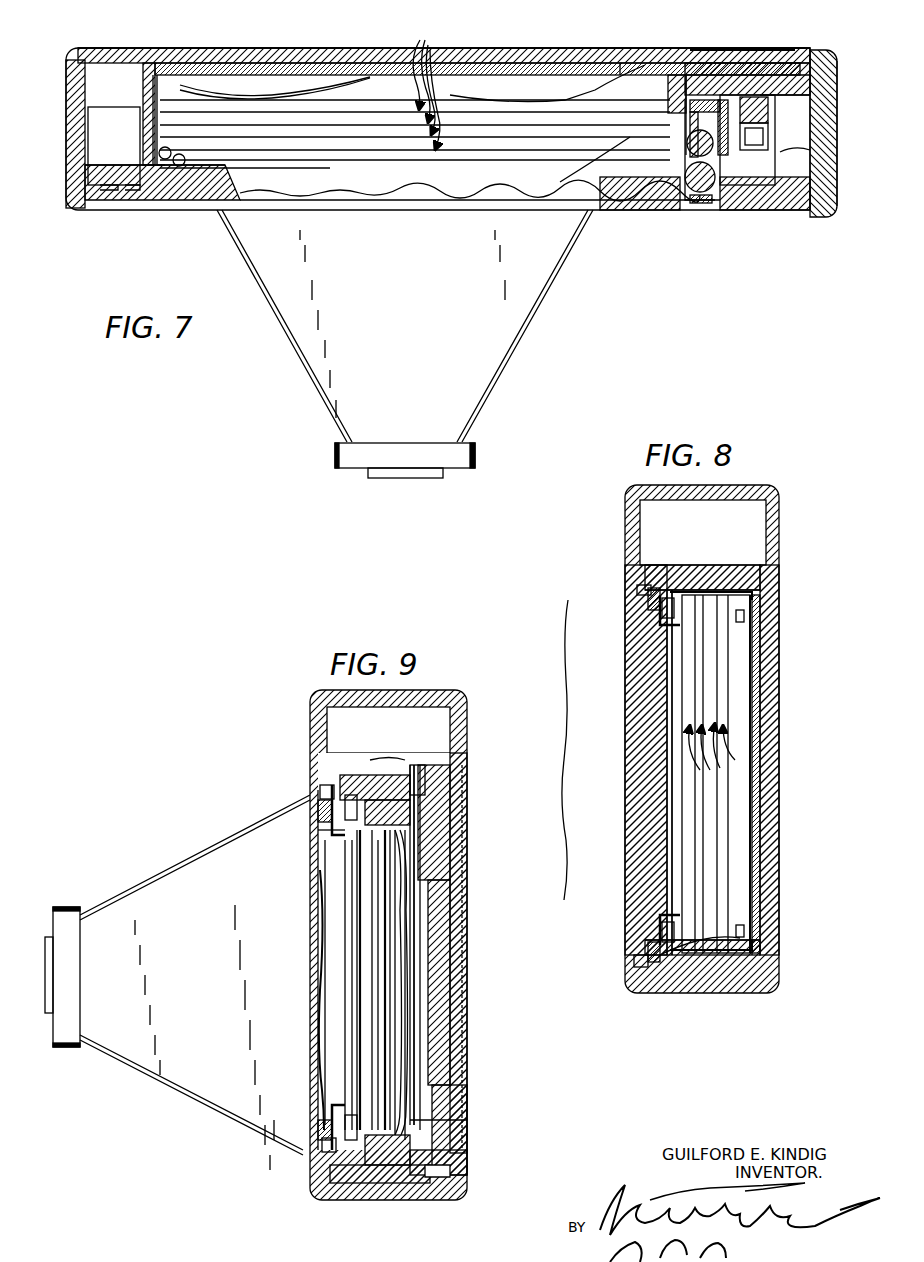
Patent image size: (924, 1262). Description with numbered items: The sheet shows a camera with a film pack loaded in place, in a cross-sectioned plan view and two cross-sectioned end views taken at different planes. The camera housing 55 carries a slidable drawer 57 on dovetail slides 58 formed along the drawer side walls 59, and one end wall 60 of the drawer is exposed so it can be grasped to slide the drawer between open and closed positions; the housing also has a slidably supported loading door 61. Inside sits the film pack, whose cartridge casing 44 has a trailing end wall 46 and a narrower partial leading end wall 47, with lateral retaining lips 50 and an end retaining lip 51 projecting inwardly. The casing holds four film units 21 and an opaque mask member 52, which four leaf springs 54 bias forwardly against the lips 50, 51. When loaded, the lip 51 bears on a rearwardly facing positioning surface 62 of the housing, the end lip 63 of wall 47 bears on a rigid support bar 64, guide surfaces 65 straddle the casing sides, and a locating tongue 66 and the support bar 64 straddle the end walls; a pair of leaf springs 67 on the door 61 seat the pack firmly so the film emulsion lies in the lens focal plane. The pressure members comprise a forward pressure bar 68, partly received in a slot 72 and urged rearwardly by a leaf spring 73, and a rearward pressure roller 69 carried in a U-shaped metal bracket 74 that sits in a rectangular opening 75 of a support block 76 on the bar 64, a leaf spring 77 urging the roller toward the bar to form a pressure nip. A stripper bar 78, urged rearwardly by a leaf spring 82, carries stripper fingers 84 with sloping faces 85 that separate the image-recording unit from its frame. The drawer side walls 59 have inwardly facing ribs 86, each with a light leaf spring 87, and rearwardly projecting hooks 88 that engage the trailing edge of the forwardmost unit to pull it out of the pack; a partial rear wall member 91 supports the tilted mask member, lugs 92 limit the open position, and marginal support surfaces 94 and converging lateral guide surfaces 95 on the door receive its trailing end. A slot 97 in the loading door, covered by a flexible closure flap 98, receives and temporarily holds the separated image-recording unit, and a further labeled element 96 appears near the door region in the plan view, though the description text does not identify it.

In FIG. 7, the film units 21 is at (429, 89).
In FIG. 8, the film units 21 is at (725, 762).
In FIG. 7, the cartridge casing 44 is at (153, 122).
In FIG. 8, the cartridge casing 44 is at (732, 985).
In FIG. 7, the trailing end wall 46 is at (163, 90).
In FIG. 7, the partial leading end wall 47 is at (579, 165).
In FIG. 7, the lateral retaining lips 50 is at (424, 160).
In FIG. 8, the lateral retaining lips 50 is at (690, 602).
In FIG. 9, the lateral retaining lips 50 is at (357, 840).
In FIG. 7, the end retaining lip 51 is at (161, 142).
In FIG. 8, the end retaining lip 51 is at (667, 753).
In FIG. 7, the mask member 52 is at (349, 152).
In FIG. 8, the mask member 52 is at (672, 800).
In FIG. 7, the leaf springs 54 is at (298, 86).
In FIG. 8, the leaf springs 54 is at (750, 610).
In FIG. 7, the housing 55 is at (781, 210).
In FIG. 8, the housing 55 is at (782, 512).
In FIG. 9, the housing 55 is at (467, 725).
In FIG. 7, the drawer 57 is at (840, 63).
In FIG. 8, the drawer 57 is at (698, 980).
In FIG. 9, the drawer 57 is at (380, 763).
In FIG. 8, the dovetail slides 58 is at (670, 565).
In FIG. 9, the dovetail slides 58 is at (370, 773).
In FIG. 7, the drawer side walls 59 is at (90, 128).
In FIG. 8, the drawer side walls 59 is at (710, 578).
In FIG. 9, the drawer side walls 59 is at (395, 792).
In FIG. 7, the end wall 60 is at (840, 94).
In FIG. 7, the loading door 61 is at (467, 54).
In FIG. 8, the loading door 61 is at (779, 690).
In FIG. 9, the loading door 61 is at (482, 761).
In FIG. 7, the positioning surface 62 is at (140, 200).
In FIG. 8, the positioning surface 62 is at (675, 669).
In FIG. 7, the end lip 63 is at (688, 105).
In FIG. 9, the end lip 63 is at (428, 953).
In FIG. 7, the support bar 64 is at (676, 82).
In FIG. 9, the support bar 64 is at (417, 1178).
In FIG. 8, the guide surfaces 65 is at (722, 588).
In FIG. 7, the locating tongue 66 is at (142, 80).
In FIG. 7, the leaf springs 67 is at (514, 56).
In FIG. 8, the leaf springs 67 is at (760, 643).
In FIG. 7, the forward pressure bar 68 is at (688, 204).
In FIG. 9, the forward pressure bar 68 is at (346, 950).
In FIG. 7, the rearward pressure roller 69 is at (705, 147).
In FIG. 9, the rearward pressure roller 69 is at (363, 975).
In FIG. 9, the slot 72 is at (328, 841).
In FIG. 7, the leaf spring 73 is at (753, 212).
In FIG. 9, the leaf spring 73 is at (326, 882).
In FIG. 7, the U-shaped metal bracket 74 is at (738, 145).
In FIG. 9, the U-shaped metal bracket 74 is at (385, 1027).
In FIG. 9, the rectangular opening 75 is at (430, 822).
In FIG. 7, the support block 76 is at (679, 110).
In FIG. 9, the support block 76 is at (416, 786).
In FIG. 7, the leaf spring 77 is at (681, 110).
In FIG. 9, the leaf spring 77 is at (385, 985).
In FIG. 7, the stripper bar 78 is at (769, 128).
In FIG. 7, the leaf spring 82 is at (767, 140).
In FIG. 7, the stripper fingers 84 is at (772, 92).
In FIG. 7, the sloping faces 85 is at (768, 97).
In FIG. 7, the ribs 86 is at (97, 182).
In FIG. 8, the ribs 86 is at (659, 602).
In FIG. 9, the ribs 86 is at (321, 805).
In FIG. 8, the leaf spring 87 is at (628, 598).
In FIG. 9, the leaf spring 87 is at (340, 810).
In FIG. 7, the hooks 88 is at (128, 193).
In FIG. 8, the hooks 88 is at (660, 615).
In FIG. 9, the hooks 88 is at (336, 818).
In FIG. 7, the partial rear wall member 91 is at (718, 77).
In FIG. 9, the partial rear wall member 91 is at (440, 1000).
In FIG. 7, the lugs 92 is at (108, 189).
In FIG. 8, the lugs 92 is at (643, 580).
In FIG. 9, the lugs 92 is at (328, 780).
In FIG. 9, the marginal support surfaces 94 is at (440, 1118).
In FIG. 9, the lateral guide surfaces 95 is at (440, 1142).
In FIG. 7, the top liner edge 96 is at (646, 54).
In FIG. 7, the slot 97 is at (750, 70).
In FIG. 9, the slot 97 is at (450, 872).
In FIG. 7, the closure flap 98 is at (762, 65).
In FIG. 9, the closure flap 98 is at (470, 898).